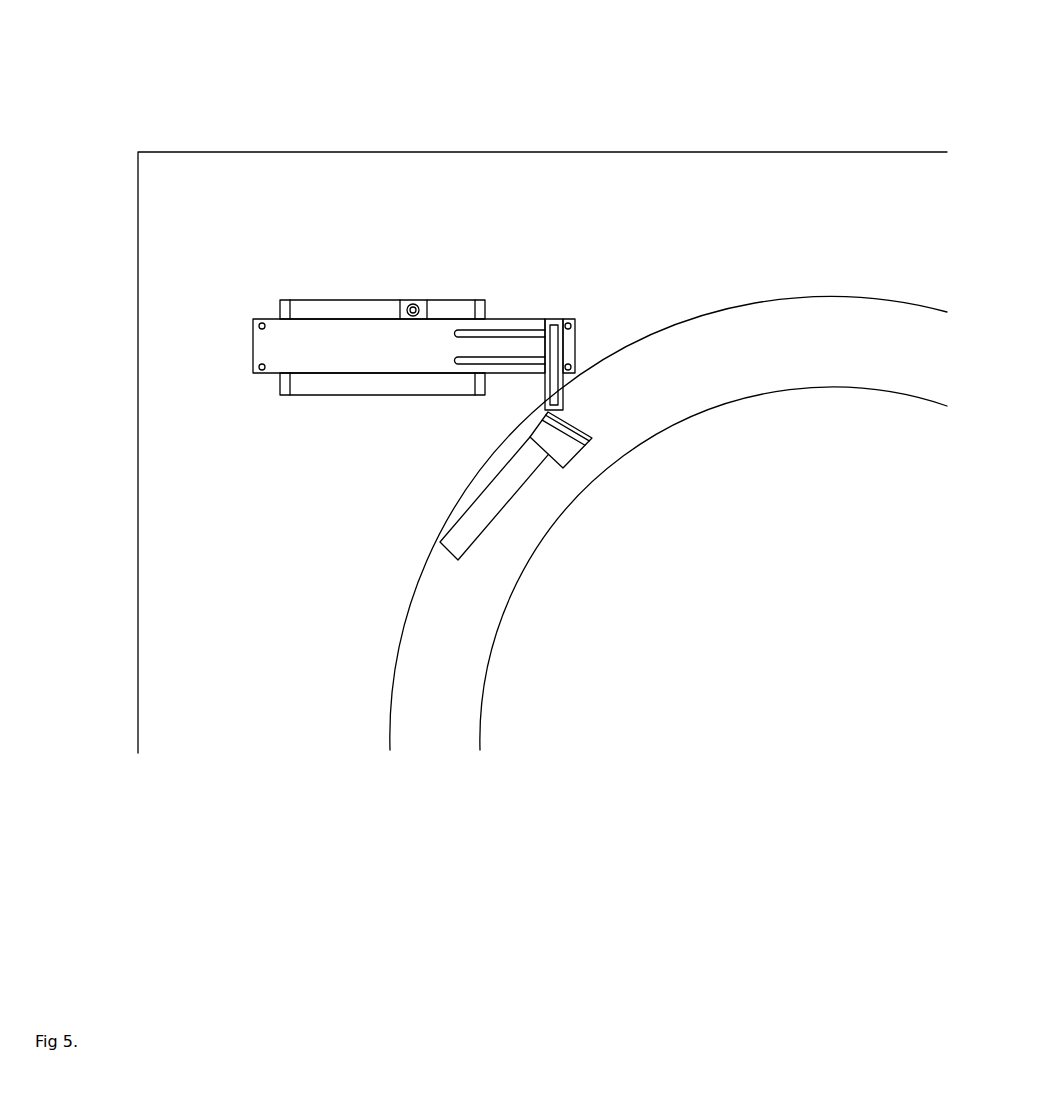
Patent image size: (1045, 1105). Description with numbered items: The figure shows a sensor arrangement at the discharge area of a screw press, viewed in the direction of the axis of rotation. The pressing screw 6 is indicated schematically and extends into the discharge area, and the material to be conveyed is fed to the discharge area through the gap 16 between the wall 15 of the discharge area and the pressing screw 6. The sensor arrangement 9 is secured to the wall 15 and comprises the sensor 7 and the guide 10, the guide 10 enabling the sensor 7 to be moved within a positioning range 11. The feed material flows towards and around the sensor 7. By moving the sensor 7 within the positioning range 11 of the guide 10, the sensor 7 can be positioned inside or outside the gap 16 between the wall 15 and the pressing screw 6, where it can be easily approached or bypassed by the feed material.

The wall 15 is at (253, 197).
The sensor arrangement 9 is at (442, 253).
The guide 10 is at (428, 340).
The positioning range 11 is at (507, 337).
The sensor 7 is at (555, 448).
The gap 16 is at (415, 633).
The pressing screw 6 is at (710, 572).